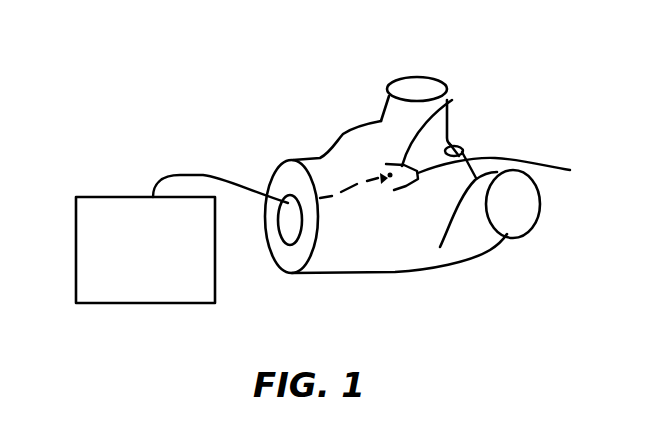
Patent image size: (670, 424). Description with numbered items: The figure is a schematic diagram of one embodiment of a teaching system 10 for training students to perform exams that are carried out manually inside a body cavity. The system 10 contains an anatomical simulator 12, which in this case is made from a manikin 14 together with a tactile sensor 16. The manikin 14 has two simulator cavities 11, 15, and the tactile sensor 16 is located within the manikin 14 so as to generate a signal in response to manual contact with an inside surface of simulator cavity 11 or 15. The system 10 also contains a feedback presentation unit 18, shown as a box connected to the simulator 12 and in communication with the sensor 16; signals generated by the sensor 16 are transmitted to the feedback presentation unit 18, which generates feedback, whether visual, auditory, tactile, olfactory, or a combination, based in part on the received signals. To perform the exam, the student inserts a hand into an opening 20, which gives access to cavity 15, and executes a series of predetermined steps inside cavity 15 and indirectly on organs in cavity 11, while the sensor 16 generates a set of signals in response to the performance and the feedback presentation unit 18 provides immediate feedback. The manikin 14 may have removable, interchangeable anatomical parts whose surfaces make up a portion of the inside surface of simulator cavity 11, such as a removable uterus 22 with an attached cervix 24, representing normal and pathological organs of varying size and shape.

The teaching system 10 is at (234, 133).
The simulator cavity 11 is at (298, 224).
The anatomical simulator 12 is at (517, 273).
The manikin 14 is at (345, 135).
The simulator cavity 15 is at (463, 135).
The tactile sensor 16 is at (390, 176).
The feedback presentation unit 18 is at (76, 237).
The opening 20 is at (462, 148).
The uterus 22 is at (448, 103).
The cervix 24 is at (508, 165).